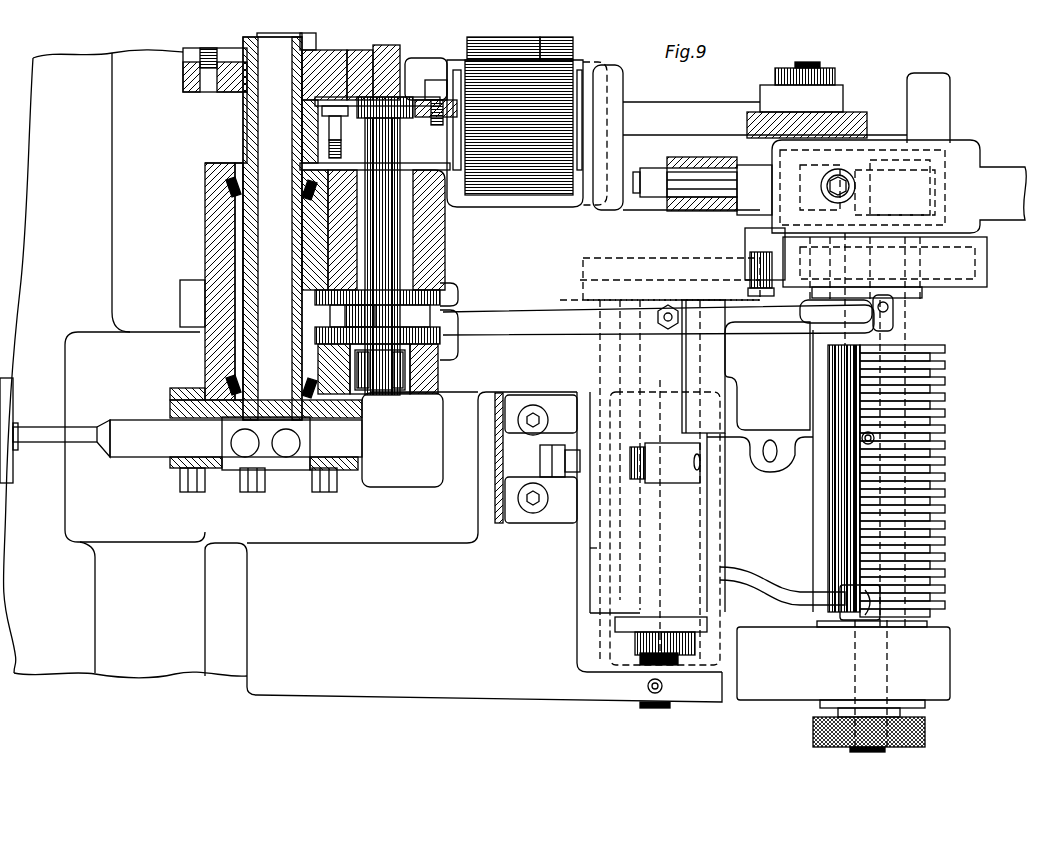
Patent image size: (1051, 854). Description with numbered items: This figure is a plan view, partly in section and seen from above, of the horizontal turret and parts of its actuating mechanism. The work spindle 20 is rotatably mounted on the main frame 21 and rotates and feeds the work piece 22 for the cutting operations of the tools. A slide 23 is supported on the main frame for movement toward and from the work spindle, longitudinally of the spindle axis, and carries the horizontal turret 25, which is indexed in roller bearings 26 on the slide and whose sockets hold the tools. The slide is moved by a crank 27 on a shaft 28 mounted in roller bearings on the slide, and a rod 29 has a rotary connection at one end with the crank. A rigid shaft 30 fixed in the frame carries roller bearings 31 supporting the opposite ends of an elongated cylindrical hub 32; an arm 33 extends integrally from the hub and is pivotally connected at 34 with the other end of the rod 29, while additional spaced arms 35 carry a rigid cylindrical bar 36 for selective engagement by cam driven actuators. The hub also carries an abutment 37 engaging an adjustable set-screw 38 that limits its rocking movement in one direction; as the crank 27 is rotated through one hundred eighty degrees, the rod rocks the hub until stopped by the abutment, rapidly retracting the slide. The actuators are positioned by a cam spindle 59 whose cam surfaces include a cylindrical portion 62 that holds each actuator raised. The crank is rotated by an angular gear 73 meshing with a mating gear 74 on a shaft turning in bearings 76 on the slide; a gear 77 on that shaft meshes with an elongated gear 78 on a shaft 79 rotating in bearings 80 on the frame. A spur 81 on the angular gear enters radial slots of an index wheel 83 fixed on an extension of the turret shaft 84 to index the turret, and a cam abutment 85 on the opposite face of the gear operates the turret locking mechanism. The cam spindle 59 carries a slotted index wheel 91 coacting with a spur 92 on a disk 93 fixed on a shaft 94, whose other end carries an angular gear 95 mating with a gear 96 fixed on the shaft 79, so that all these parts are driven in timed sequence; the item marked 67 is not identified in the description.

The work spindle 20 is at (12, 412).
The main frame 21 is at (363, 379).
The work piece 22 is at (97, 430).
The slide 23 is at (432, 229).
The horizontal turret 25 is at (172, 412).
The roller bearings 26 is at (218, 188).
The crank 27 is at (447, 298).
The shaft 28 is at (400, 268).
The rod 29 is at (542, 324).
The shaft 30 is at (680, 537).
The roller bearings 31 is at (620, 301).
The cylindrical hub 32 is at (578, 553).
The arm 33 is at (683, 380).
The pivotal connection 34 is at (715, 420).
The spaced arms 35 is at (803, 327).
The cylindrical bar 36 is at (800, 544).
The abutment 37 is at (634, 484).
The set-screw 38 is at (553, 474).
The cam spindle 59 is at (908, 253).
The cylindrical portion 62 is at (911, 465).
The clamp screw 67 is at (683, 172).
The angular gear 73 is at (428, 160).
The mating gear 74 is at (384, 52).
The bearings 76 is at (419, 62).
The gear 77 is at (508, 44).
The gear 78 is at (560, 44).
The shaft 79 is at (662, 112).
The bearings 80 is at (624, 92).
The spur 81 is at (429, 92).
The index wheel 83 is at (184, 87).
The shaft 84 is at (258, 210).
The cam abutment 85 is at (327, 134).
The index wheel 91 is at (955, 272).
The spur 92 is at (761, 287).
The disk 93 is at (752, 245).
The shaft 94 is at (815, 70).
The angular gear 95 is at (864, 115).
The gear 96 is at (835, 99).